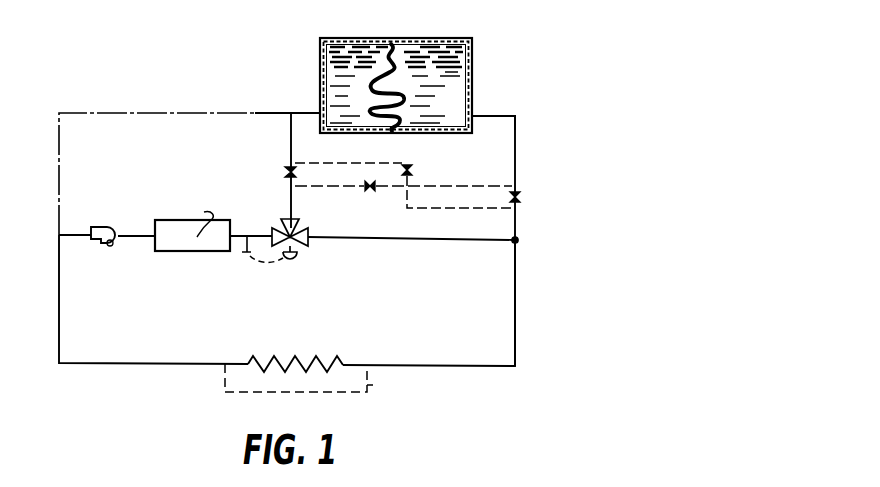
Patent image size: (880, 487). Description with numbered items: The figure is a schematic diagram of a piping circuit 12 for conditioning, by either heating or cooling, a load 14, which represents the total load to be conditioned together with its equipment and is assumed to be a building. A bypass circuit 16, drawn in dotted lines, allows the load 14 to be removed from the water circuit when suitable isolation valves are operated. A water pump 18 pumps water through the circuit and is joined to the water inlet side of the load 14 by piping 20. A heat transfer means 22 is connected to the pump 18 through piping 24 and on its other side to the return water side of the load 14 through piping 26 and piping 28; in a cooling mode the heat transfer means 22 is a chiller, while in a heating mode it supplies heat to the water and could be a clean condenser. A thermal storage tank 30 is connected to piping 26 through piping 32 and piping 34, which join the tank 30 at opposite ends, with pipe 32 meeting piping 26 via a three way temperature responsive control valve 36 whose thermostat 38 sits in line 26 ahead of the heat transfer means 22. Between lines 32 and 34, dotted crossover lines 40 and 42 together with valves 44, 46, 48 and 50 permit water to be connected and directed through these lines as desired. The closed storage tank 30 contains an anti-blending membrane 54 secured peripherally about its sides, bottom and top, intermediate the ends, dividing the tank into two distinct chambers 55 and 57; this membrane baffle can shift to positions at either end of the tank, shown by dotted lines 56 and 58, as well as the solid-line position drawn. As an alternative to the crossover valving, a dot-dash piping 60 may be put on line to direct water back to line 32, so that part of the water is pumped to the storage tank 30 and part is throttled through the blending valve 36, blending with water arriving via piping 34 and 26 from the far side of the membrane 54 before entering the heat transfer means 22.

The circuit 12 is at (248, 67).
The load 14 is at (344, 364).
The bypass circuit 16 is at (374, 386).
The water pump 18 is at (108, 247).
The piping 20 is at (59, 340).
The heat transfer means 22 is at (206, 251).
The piping 24 is at (118, 230).
The piping 26 is at (435, 239).
The piping 28 is at (515, 320).
The thermal storage tank 30 is at (472, 40).
The piping 32 is at (291, 128).
The piping 34 is at (515, 132).
The three way temperature responsive control valve 36 is at (298, 258).
The thermostat 38 is at (247, 256).
The crossover line 40 is at (378, 163).
The crossover line 42 is at (479, 186).
The valve 44 is at (286, 171).
The valve 46 is at (411, 168).
The valve 48 is at (370, 191).
The valve 50 is at (520, 197).
The anti-blending membrane 54 is at (404, 46).
The chamber 55 is at (345, 62).
The dotted line membrane position 56 is at (320, 80).
The chamber 57 is at (445, 62).
The dotted line membrane position 58 is at (476, 90).
The piping 60 is at (93, 113).